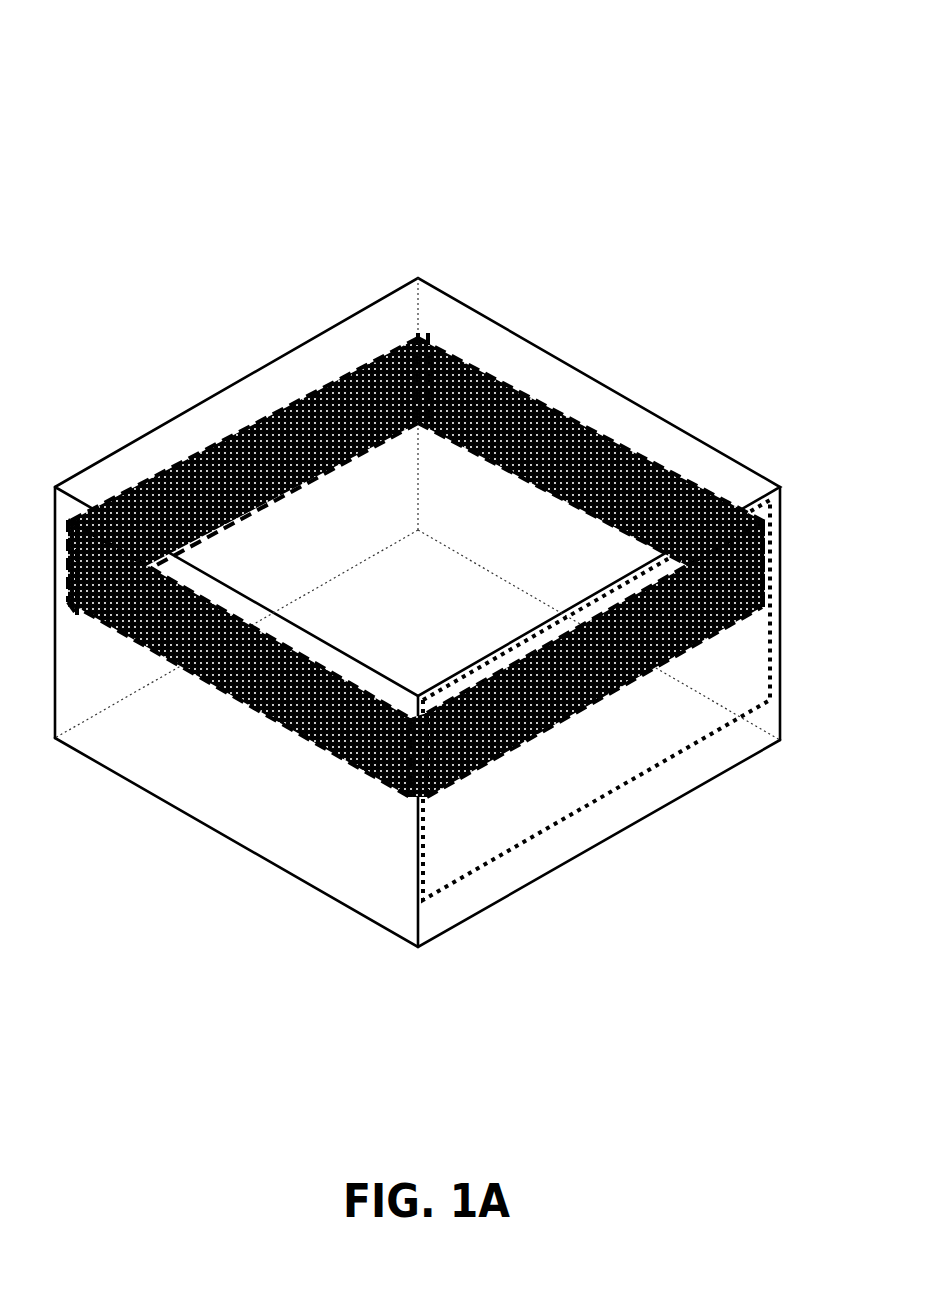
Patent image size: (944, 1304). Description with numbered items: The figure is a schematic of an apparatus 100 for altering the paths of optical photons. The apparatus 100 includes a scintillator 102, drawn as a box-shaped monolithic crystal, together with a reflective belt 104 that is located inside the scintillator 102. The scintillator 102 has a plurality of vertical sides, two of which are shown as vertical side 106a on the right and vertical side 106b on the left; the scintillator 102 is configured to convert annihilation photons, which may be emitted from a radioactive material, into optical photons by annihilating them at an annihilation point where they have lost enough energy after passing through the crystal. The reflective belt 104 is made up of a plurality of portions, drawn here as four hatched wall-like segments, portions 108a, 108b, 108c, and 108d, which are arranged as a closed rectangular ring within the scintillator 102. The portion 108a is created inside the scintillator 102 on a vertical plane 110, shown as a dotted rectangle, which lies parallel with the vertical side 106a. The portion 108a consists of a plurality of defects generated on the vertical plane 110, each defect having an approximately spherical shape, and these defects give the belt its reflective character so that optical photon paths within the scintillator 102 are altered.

The apparatus 100 is at (848, 51).
The scintillator 102 is at (432, 285).
The reflective belt 104 is at (416, 589).
The vertical side 106a is at (698, 763).
The vertical side 106b is at (145, 743).
The portion 108a is at (640, 672).
The portion 108b is at (243, 707).
The portion 108c is at (238, 520).
The portion 108d is at (531, 482).
The vertical plane 110 is at (604, 800).